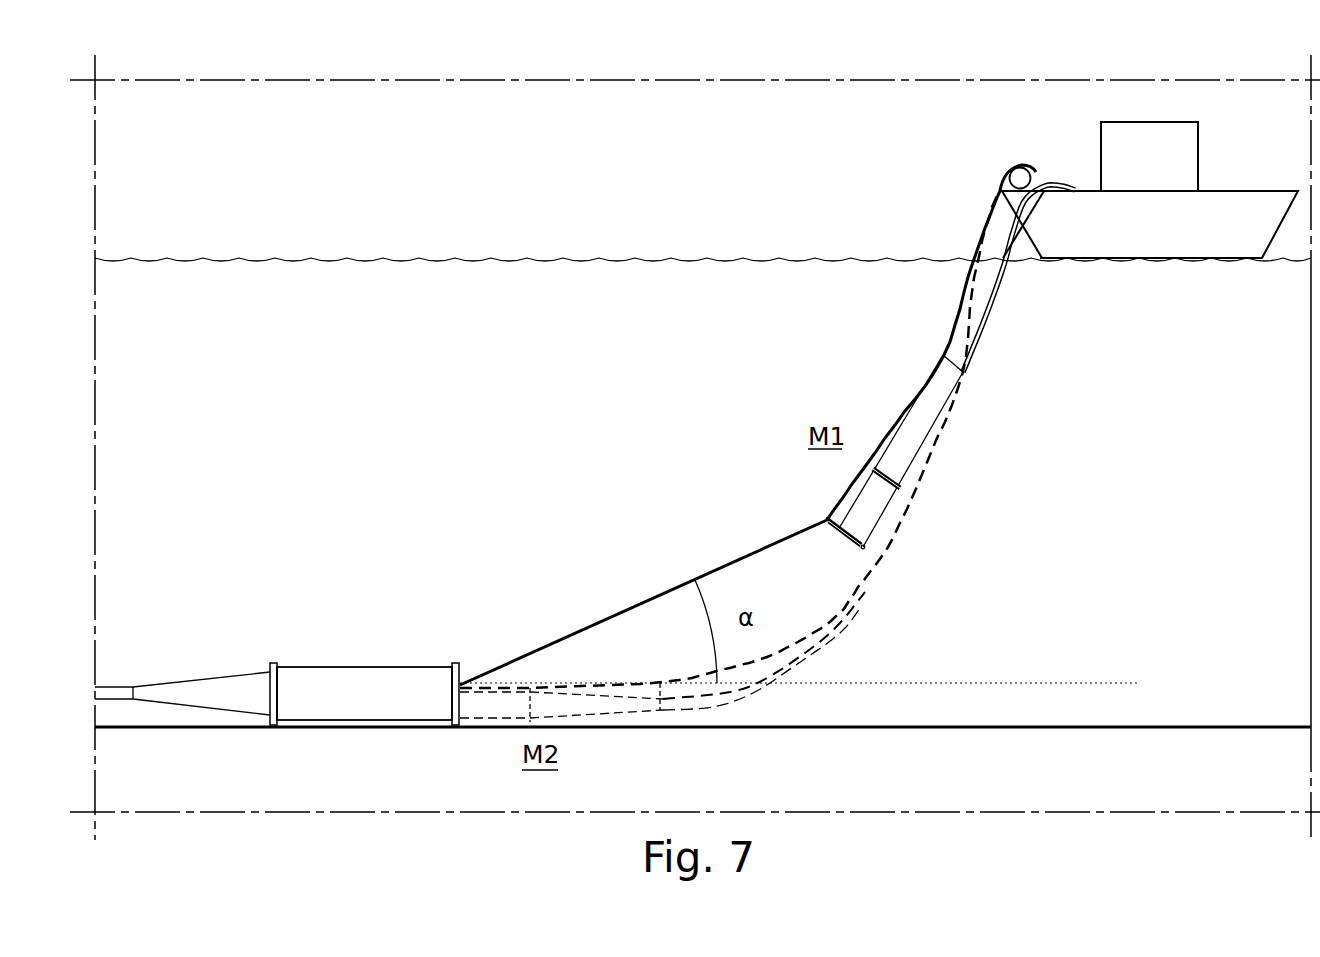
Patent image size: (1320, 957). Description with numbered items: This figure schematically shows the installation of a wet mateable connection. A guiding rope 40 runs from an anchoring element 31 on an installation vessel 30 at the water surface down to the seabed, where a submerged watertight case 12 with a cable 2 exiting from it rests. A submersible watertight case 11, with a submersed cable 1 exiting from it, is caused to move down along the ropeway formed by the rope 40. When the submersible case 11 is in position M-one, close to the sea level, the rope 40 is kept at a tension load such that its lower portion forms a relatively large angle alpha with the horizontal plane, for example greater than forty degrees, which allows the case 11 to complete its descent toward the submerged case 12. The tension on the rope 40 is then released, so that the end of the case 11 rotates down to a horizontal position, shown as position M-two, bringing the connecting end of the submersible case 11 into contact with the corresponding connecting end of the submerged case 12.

The submersed cable 1 is at (1000, 322).
The cable 2 is at (123, 692).
The submersible watertight case 11 is at (878, 492).
The submerged watertight case 12 is at (412, 708).
The installation vessel 30 is at (1123, 245).
The anchoring element 31 is at (1024, 177).
The guiding rope 40 is at (627, 608).